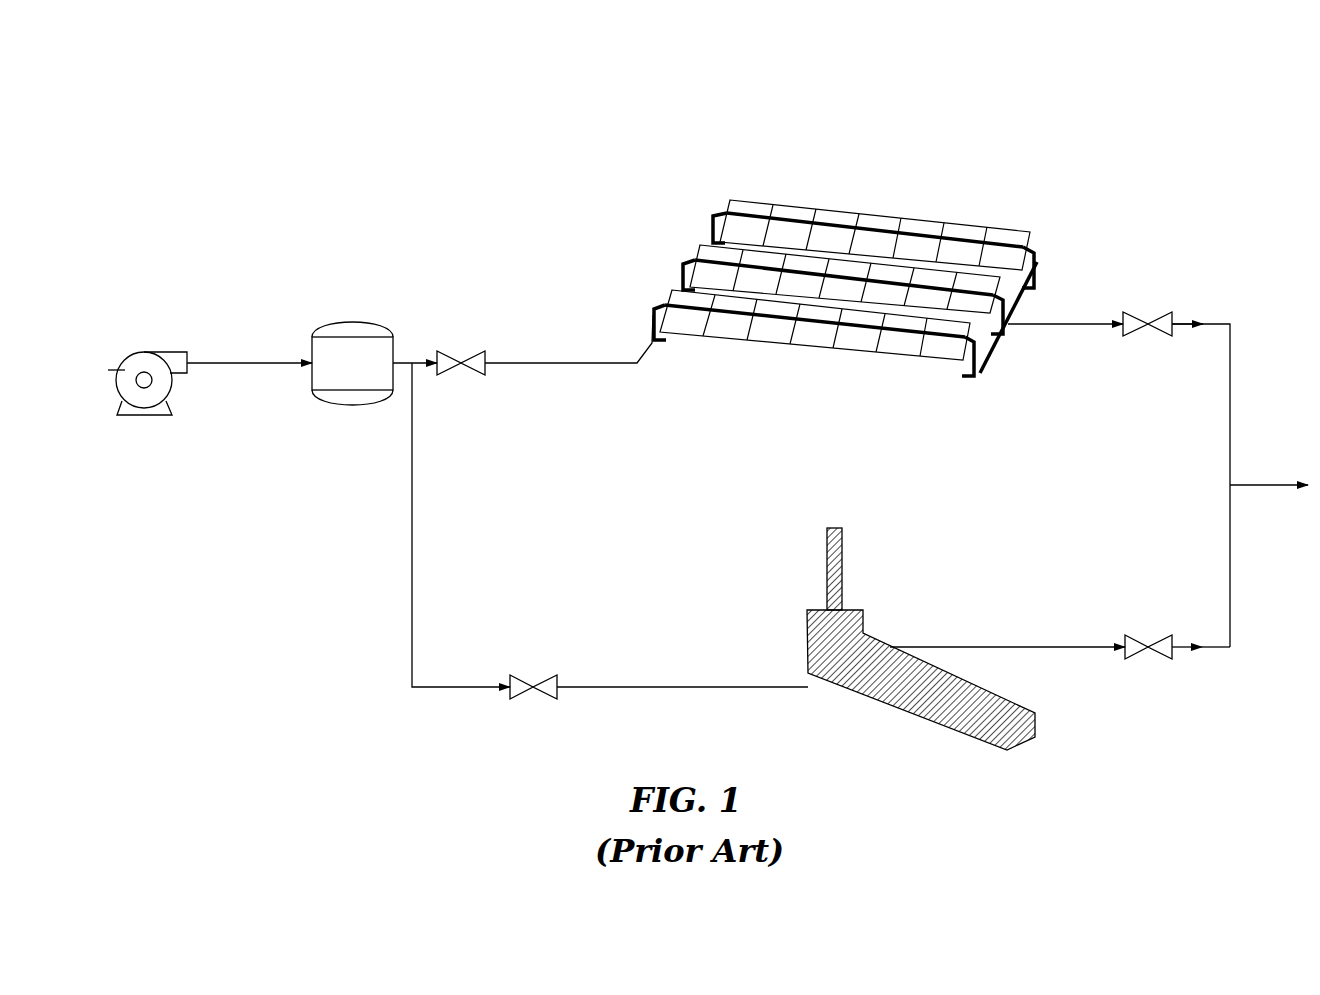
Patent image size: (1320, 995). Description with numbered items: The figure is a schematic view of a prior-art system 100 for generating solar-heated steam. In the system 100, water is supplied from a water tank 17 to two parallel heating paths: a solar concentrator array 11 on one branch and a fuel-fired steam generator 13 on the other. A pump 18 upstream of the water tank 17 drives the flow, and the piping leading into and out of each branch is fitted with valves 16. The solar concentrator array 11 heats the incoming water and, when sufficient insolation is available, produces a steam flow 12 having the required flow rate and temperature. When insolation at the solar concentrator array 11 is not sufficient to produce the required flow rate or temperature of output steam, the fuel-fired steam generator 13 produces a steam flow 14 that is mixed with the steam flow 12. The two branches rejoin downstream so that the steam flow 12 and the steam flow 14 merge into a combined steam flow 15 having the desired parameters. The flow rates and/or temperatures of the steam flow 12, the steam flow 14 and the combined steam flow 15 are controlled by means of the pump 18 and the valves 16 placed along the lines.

The system 100 is at (168, 130).
The solar concentrator array 11 is at (996, 206).
The steam flow 12 is at (1198, 324).
The fuel-fired steam generator 13 is at (795, 606).
The steam flow 14 is at (1198, 647).
The combined steam flow 15 is at (1262, 485).
The valves 16 is at (461, 363).
The water tank 17 is at (354, 322).
The pump 18 is at (162, 352).